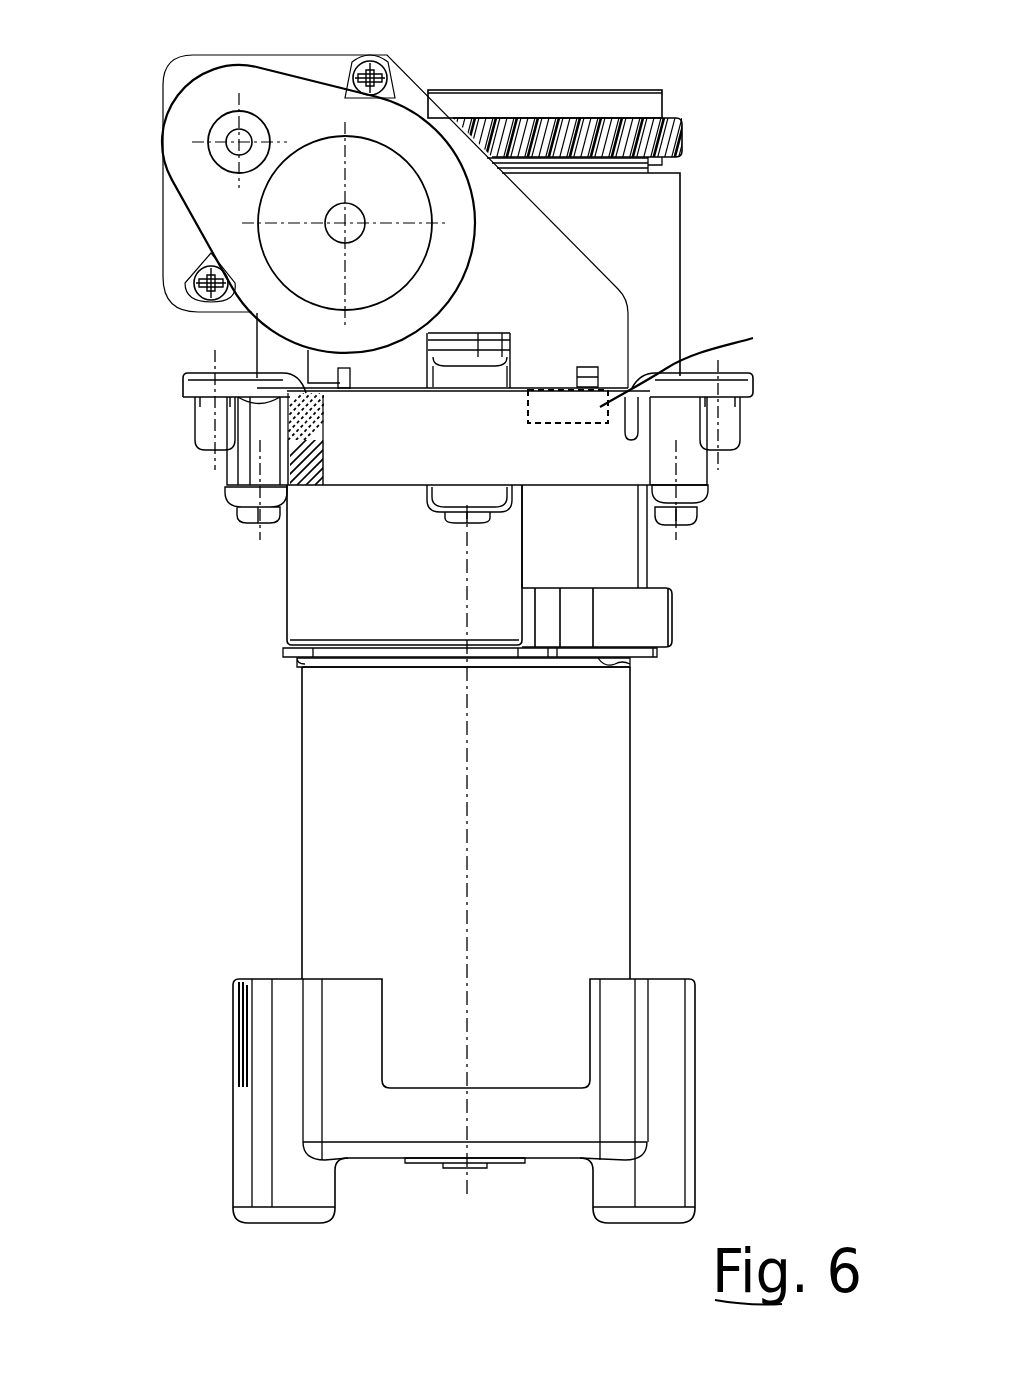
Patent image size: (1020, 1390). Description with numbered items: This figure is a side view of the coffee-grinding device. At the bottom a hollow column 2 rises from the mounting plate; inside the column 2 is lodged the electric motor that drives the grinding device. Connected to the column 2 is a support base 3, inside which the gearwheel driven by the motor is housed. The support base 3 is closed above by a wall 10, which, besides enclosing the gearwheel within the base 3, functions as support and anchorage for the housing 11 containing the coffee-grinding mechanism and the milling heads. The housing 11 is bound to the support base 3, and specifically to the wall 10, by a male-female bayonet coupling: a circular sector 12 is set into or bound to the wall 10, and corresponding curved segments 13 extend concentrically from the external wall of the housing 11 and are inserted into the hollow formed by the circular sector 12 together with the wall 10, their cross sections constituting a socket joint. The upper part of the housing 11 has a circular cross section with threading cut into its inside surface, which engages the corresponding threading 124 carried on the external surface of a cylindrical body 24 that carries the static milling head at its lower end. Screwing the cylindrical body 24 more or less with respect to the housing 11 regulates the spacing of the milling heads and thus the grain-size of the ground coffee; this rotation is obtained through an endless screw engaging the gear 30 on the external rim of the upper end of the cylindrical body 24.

The hollow column 2 is at (630, 788).
The support base 3 is at (603, 557).
The wall 10 is at (323, 447).
The housing 11 is at (647, 238).
The circular sector 12 is at (300, 440).
The curved segments 13 is at (330, 397).
The cylindrical body 24 is at (650, 108).
The gear 30 is at (610, 135).
The threading 124 is at (654, 170).